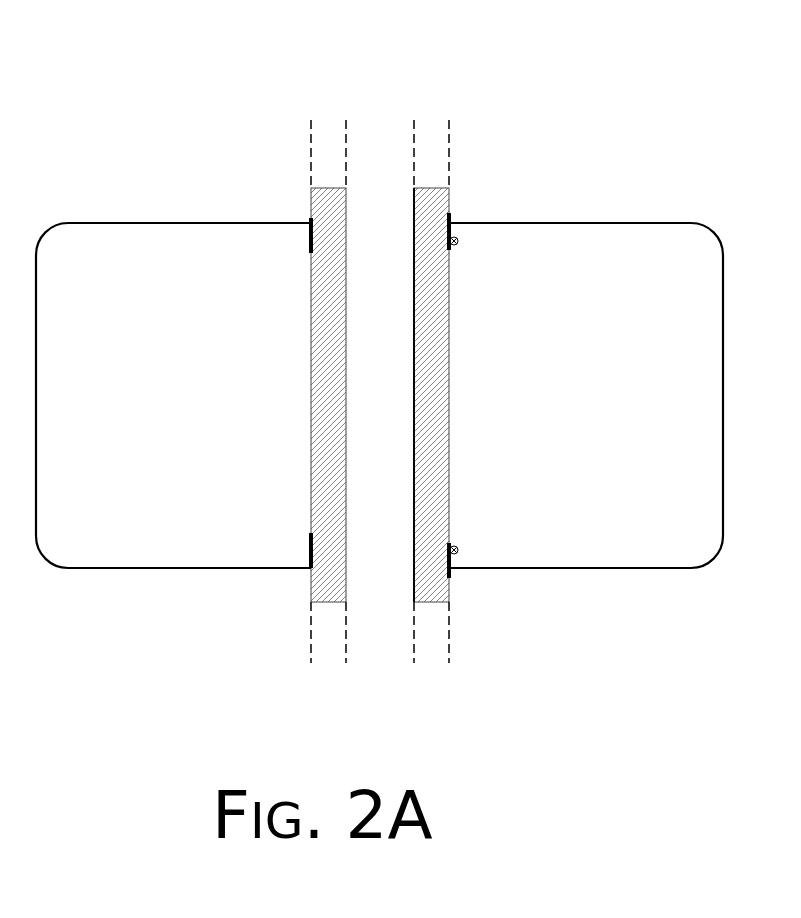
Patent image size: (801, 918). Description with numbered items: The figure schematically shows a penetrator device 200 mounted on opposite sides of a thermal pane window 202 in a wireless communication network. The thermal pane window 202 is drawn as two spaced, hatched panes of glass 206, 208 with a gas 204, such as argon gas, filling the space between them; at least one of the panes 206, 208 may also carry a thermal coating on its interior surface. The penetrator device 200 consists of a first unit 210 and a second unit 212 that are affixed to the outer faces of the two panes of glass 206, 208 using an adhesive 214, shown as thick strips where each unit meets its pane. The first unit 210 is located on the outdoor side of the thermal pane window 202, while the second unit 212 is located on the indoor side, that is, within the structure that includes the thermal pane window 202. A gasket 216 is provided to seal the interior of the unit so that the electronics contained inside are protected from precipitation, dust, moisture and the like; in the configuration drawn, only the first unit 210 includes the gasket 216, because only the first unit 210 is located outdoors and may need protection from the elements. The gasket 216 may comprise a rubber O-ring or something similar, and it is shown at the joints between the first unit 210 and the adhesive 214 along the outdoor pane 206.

The penetrator device 200 is at (690, 196).
The thermal pane window 202 is at (293, 105).
The gas 204 is at (380, 395).
The pane of glass 206 is at (447, 208).
The pane of glass 208 is at (316, 206).
The first unit 210 is at (586, 395).
The second unit 212 is at (173, 395).
The adhesive 214 is at (503, 243).
The gasket 216 is at (458, 250).